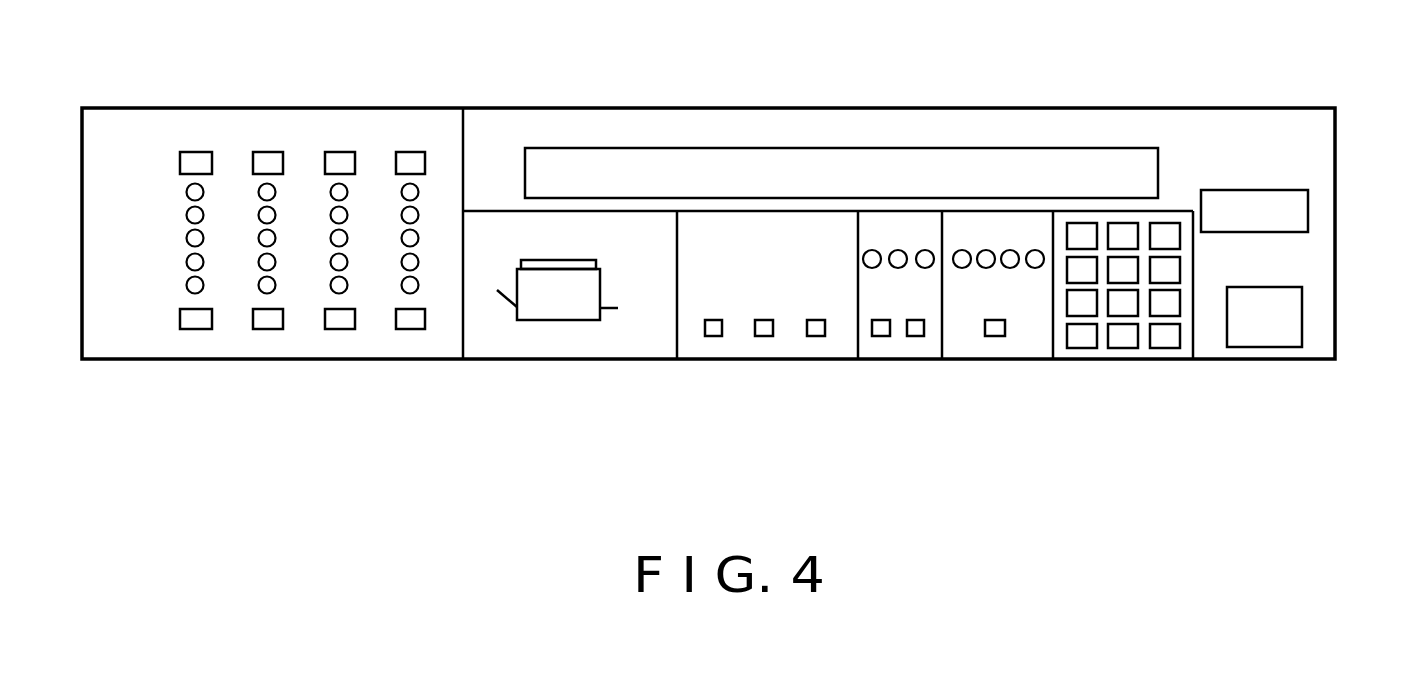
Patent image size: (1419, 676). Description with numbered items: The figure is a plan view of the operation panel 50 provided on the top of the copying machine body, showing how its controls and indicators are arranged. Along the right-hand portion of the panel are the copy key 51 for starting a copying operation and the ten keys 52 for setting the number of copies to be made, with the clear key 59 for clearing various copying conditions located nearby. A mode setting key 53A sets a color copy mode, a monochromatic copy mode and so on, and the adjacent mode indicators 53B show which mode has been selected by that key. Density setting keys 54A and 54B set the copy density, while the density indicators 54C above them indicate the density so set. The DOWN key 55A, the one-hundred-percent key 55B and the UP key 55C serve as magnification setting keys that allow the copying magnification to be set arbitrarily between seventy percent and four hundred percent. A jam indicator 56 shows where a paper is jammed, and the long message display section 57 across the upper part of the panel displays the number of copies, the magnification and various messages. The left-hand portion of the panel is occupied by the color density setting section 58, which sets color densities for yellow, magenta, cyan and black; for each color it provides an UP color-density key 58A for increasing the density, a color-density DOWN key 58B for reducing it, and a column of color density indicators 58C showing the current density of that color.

The operation panel 50 is at (852, 95).
The copy key 51 is at (1265, 340).
The ten keys 52 is at (1142, 340).
The mode setting key 53A is at (995, 336).
The mode indicators 53B is at (972, 267).
The density setting key 54A is at (915, 336).
The density setting key 54B is at (880, 336).
The density indicators 54C is at (867, 270).
The DOWN key 55A is at (815, 336).
The 100% key 55B is at (763, 336).
The UP key 55C is at (713, 336).
The jam indicator 56 is at (568, 310).
The message display section 57 is at (728, 167).
The color density setting section 58 is at (119, 120).
The UP color-density keys 58A is at (205, 157).
The color-density DOWN keys 58B is at (194, 330).
The color density indicators 58C is at (129, 302).
The clear key 59 is at (1308, 200).